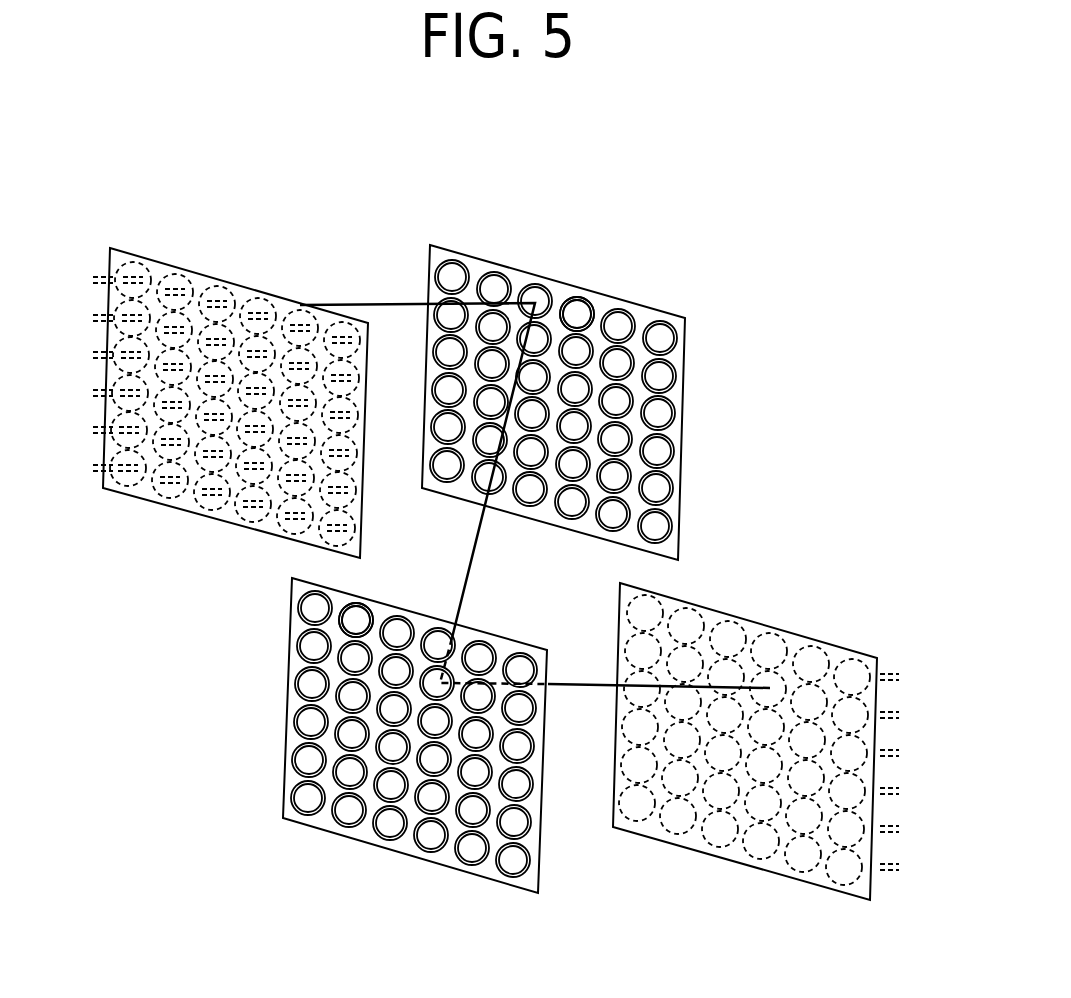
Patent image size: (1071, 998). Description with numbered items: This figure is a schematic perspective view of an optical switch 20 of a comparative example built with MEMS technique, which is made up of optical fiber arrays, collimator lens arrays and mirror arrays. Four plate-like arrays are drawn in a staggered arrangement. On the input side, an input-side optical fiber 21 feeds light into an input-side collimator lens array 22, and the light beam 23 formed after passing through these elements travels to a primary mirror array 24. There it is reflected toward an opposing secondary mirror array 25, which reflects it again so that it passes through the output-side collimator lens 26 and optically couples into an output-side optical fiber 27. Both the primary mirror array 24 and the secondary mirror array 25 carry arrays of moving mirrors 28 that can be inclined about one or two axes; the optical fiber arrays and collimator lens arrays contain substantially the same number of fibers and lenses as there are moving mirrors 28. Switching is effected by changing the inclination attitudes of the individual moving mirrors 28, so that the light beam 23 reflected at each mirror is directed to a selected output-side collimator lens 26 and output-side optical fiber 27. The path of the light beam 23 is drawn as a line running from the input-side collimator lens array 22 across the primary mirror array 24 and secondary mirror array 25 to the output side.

The optical switch 20 is at (680, 230).
The input-side optical fiber 21 is at (100, 277).
The input-side collimator lens array 22 is at (243, 285).
The light beam 23 is at (372, 303).
The primary mirror array 24 is at (498, 263).
The secondary mirror array 25 is at (477, 645).
The output-side collimator lens 26 is at (753, 620).
The output-side optical fiber 27 is at (897, 677).
The moving mirrors 28 is at (577, 312).